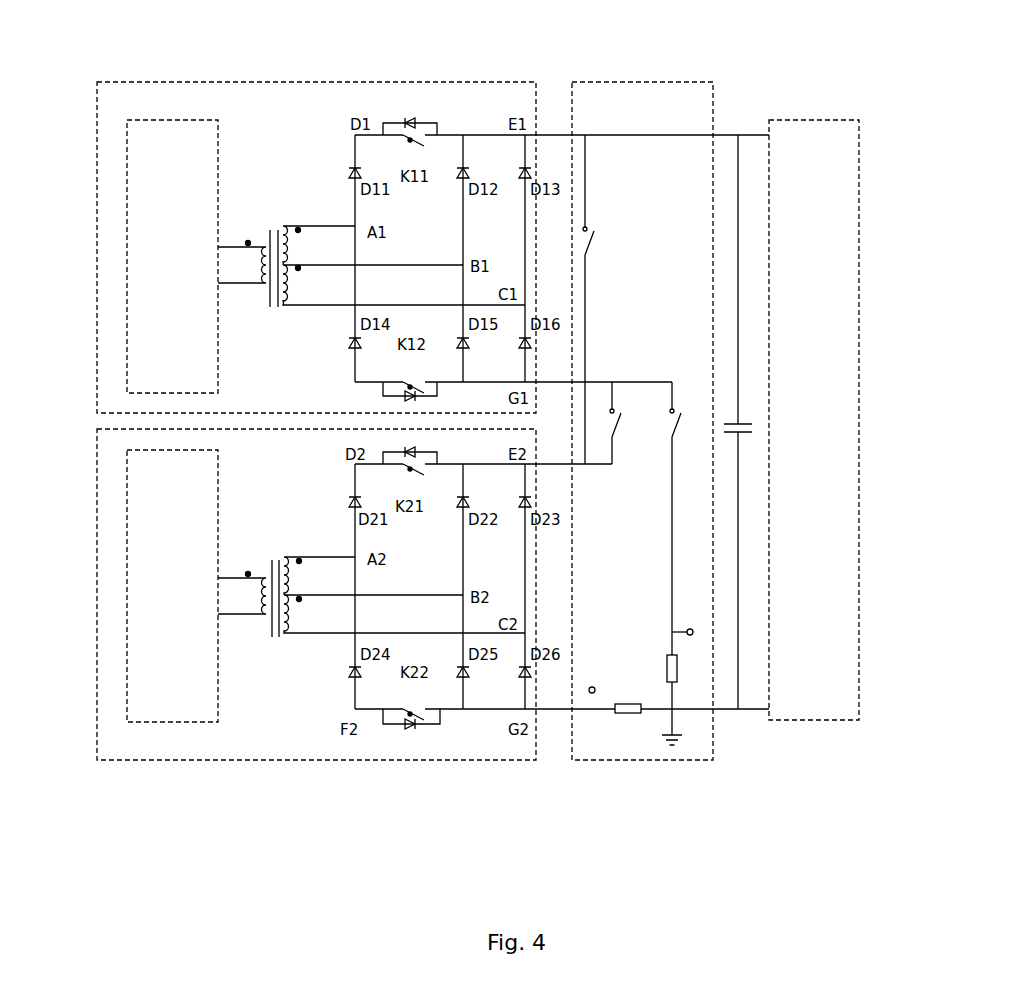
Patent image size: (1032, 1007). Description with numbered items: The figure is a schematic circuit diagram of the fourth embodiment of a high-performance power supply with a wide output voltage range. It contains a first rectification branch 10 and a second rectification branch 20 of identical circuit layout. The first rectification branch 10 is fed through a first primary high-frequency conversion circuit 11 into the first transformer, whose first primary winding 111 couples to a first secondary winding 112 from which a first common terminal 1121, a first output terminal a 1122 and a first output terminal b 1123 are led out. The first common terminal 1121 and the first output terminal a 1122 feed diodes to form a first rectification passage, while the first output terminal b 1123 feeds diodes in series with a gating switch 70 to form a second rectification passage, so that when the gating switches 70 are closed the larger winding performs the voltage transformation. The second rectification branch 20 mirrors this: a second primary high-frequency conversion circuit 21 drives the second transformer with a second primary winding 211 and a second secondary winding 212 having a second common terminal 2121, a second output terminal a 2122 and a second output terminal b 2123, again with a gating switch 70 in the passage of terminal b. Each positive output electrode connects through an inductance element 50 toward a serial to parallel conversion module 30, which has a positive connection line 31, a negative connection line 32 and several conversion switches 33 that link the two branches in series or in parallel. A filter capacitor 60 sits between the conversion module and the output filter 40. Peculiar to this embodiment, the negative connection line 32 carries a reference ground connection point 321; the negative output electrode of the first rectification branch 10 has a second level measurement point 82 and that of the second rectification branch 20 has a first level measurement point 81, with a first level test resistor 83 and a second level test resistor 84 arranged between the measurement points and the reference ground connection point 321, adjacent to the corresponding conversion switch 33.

The first rectification branch 10 is at (150, 82).
The first primary high-frequency conversion circuit 11 is at (130, 172).
The first primary winding 111 is at (262, 245).
The first secondary winding 112 is at (371, 266).
The first common terminal 1121 is at (333, 309).
The first output terminal a 1122 is at (305, 307).
The first output terminal b 1123 is at (315, 224).
The second rectification branch 20 is at (155, 762).
The second primary high-frequency conversion circuit 21 is at (130, 495).
The second primary winding 211 is at (262, 577).
The second secondary winding 212 is at (371, 609).
The second common terminal 2121 is at (332, 639).
The second output terminal a 2122 is at (305, 634).
The second output terminal b 2123 is at (315, 555).
The serial to parallel conversion module 30 is at (630, 82).
The positive connection line 31 is at (682, 135).
The negative connection line 32 is at (700, 712).
The reference ground connection point 321 is at (672, 748).
The conversion switch 33 is at (592, 238).
The output filter 40 is at (845, 183).
The inductance element 50 is at (553, 133).
The filter capacitor 60 is at (745, 423).
The gating switch 70 is at (418, 158).
The first level measurement point 81 is at (590, 695).
The second level measurement point 82 is at (694, 631).
The first level test resistor 83 is at (628, 715).
The second level test resistor 84 is at (677, 670).